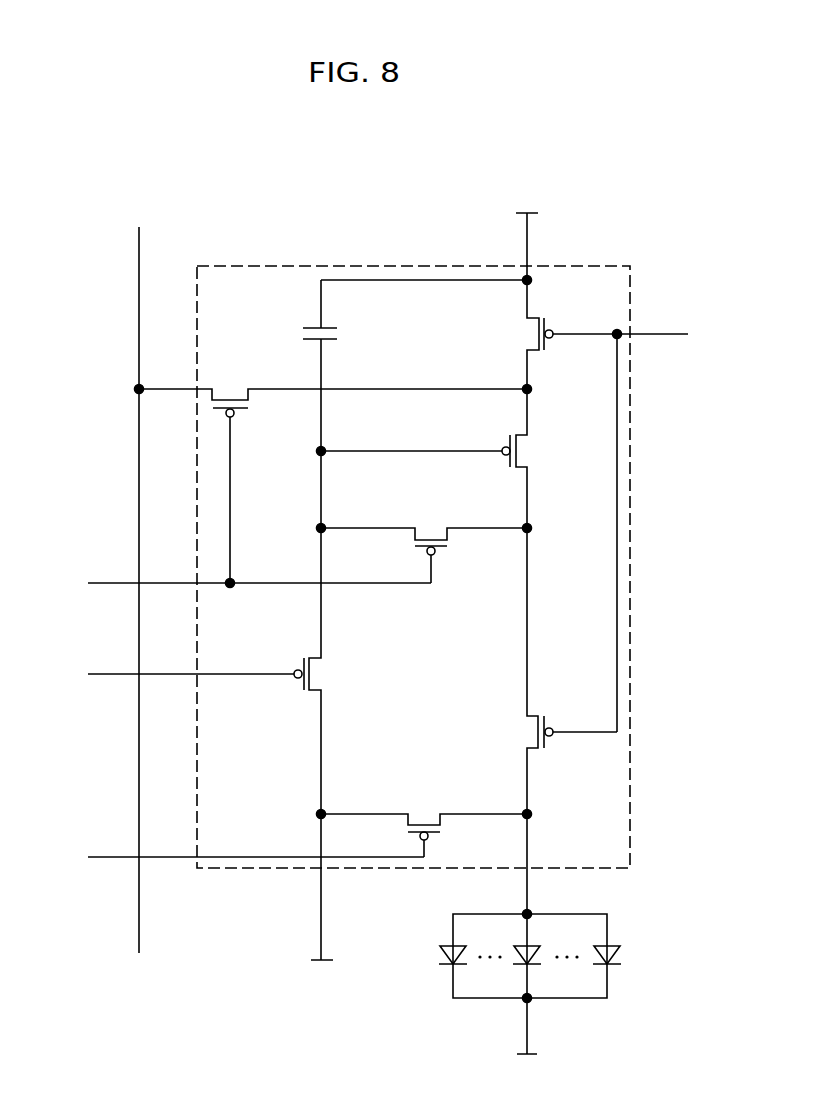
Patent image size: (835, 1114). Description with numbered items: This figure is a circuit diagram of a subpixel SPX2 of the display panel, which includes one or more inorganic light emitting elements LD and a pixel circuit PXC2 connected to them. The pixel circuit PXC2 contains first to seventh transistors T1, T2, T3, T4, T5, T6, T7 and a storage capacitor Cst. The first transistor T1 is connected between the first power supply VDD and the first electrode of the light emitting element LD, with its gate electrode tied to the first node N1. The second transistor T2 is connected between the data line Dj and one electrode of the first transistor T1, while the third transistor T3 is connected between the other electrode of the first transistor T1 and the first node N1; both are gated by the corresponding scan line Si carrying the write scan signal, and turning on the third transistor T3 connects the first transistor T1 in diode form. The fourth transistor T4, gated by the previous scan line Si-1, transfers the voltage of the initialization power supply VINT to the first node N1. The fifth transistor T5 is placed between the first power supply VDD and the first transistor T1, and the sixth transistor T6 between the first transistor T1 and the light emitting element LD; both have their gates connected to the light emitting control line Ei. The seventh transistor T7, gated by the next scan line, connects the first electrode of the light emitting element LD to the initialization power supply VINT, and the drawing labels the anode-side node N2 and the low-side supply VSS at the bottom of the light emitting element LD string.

The subpixel SPX2 is at (641, 158).
The pixel circuit PXC2 is at (630, 551).
The first transistor T1 is at (432, 458).
The second transistor T2 is at (333, 474).
The third transistor T3 is at (424, 540).
The fourth transistor T4 is at (318, 632).
The fifth transistor T5 is at (598, 337).
The sixth transistor T6 is at (558, 671).
The seventh transistor T7 is at (422, 820).
The storage capacitor Cst is at (415, 365).
The first node N1 is at (309, 451).
The second node N2 is at (543, 814).
The inorganic light emitting element LD is at (543, 908).
The data line Dj is at (141, 570).
The scan line Si is at (239, 588).
The i−1-th scan line Si-1 is at (170, 677).
The light emitting control line Ei is at (663, 525).
The first power supply VDD is at (527, 235).
The second power supply VSS is at (528, 1043).
The initialization power supply VINT is at (321, 903).